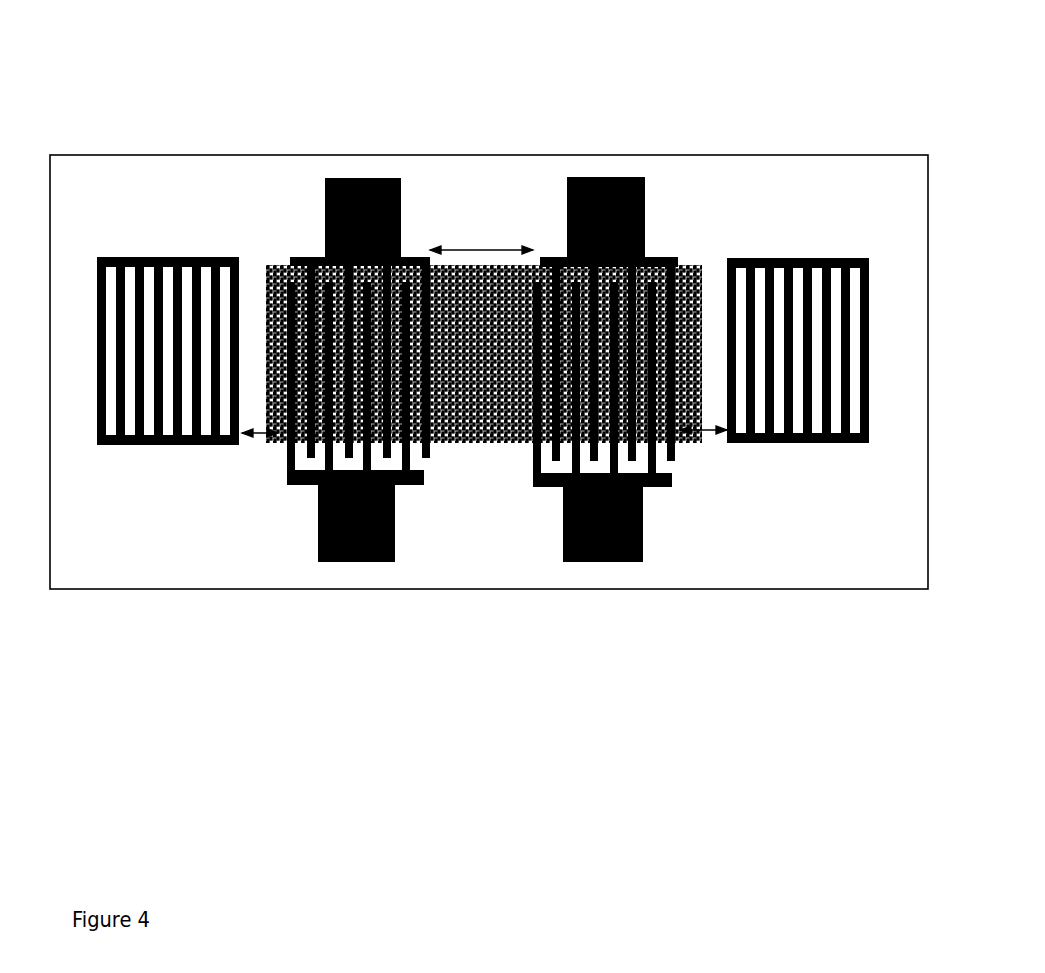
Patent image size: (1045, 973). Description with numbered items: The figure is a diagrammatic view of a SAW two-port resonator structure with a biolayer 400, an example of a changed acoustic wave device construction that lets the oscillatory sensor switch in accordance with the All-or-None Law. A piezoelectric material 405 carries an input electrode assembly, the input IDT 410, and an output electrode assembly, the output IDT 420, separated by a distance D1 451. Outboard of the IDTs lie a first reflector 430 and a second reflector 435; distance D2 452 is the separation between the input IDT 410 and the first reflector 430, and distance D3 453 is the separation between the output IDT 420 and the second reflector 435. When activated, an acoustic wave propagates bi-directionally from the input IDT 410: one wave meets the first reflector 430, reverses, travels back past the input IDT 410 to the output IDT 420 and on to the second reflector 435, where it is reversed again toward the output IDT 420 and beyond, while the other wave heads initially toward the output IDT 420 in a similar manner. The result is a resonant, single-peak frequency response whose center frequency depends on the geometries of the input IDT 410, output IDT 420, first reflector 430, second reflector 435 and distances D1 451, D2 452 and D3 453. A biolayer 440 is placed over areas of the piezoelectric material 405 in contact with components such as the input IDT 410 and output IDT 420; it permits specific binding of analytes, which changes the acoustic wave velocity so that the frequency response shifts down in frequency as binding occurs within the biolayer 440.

The SAW two-port resonator structure with a biolayer 400 is at (288, 685).
The piezoelectric material 405 is at (243, 167).
The input IDT 410 is at (431, 465).
The output IDT 420 is at (542, 258).
The reflector #1 430 is at (126, 243).
The reflector #2 435 is at (815, 245).
The biolayer 440 is at (500, 410).
The distance D1 451 is at (455, 213).
The distance D2 452 is at (267, 473).
The distance D3 453 is at (709, 478).